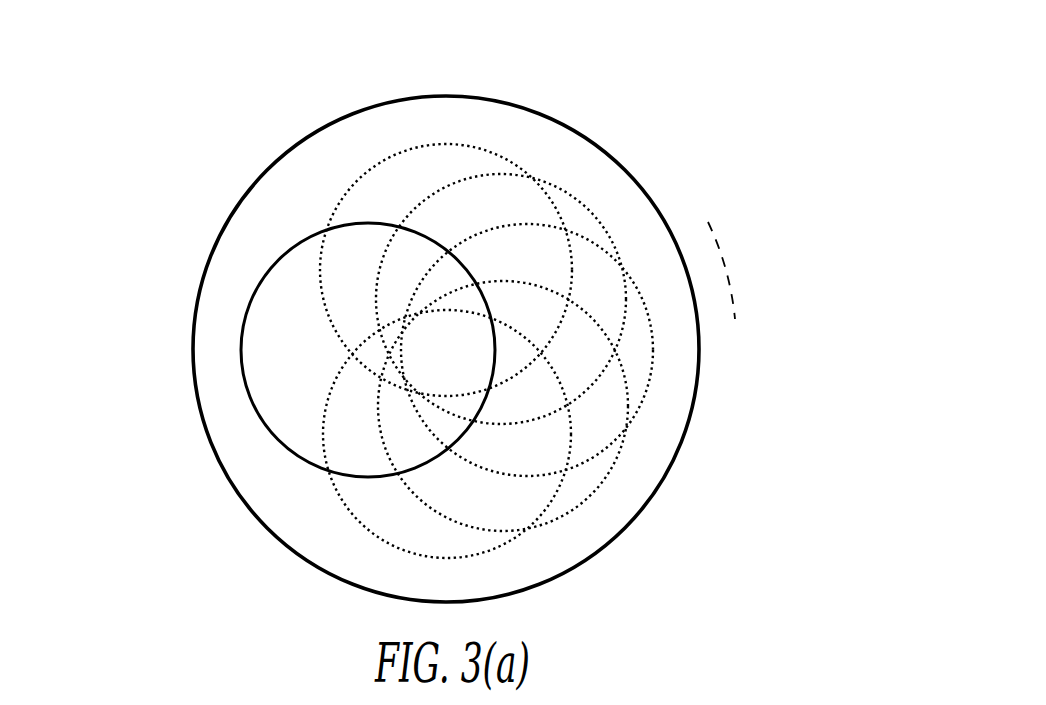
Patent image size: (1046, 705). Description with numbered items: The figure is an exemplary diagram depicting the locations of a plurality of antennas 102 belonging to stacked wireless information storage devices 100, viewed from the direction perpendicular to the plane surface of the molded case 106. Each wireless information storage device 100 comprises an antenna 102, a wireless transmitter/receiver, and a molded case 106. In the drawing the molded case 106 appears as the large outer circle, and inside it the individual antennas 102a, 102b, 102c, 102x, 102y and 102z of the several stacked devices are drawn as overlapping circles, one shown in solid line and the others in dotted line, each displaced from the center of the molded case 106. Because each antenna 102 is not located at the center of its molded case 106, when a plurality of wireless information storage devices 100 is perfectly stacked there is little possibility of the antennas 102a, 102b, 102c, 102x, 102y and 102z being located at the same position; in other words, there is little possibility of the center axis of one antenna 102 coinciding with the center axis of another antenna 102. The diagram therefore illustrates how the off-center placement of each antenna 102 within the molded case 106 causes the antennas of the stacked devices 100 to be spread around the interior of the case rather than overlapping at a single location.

The wireless information storage device 100 is at (515, 99).
The molded case 106 is at (273, 177).
The antenna 102 is at (712, 187).
The antenna 102a is at (239, 350).
The antenna 102b is at (502, 157).
The antenna 102c is at (595, 223).
The antenna 102x is at (652, 345).
The antenna 102y is at (601, 473).
The antenna 102z is at (503, 545).